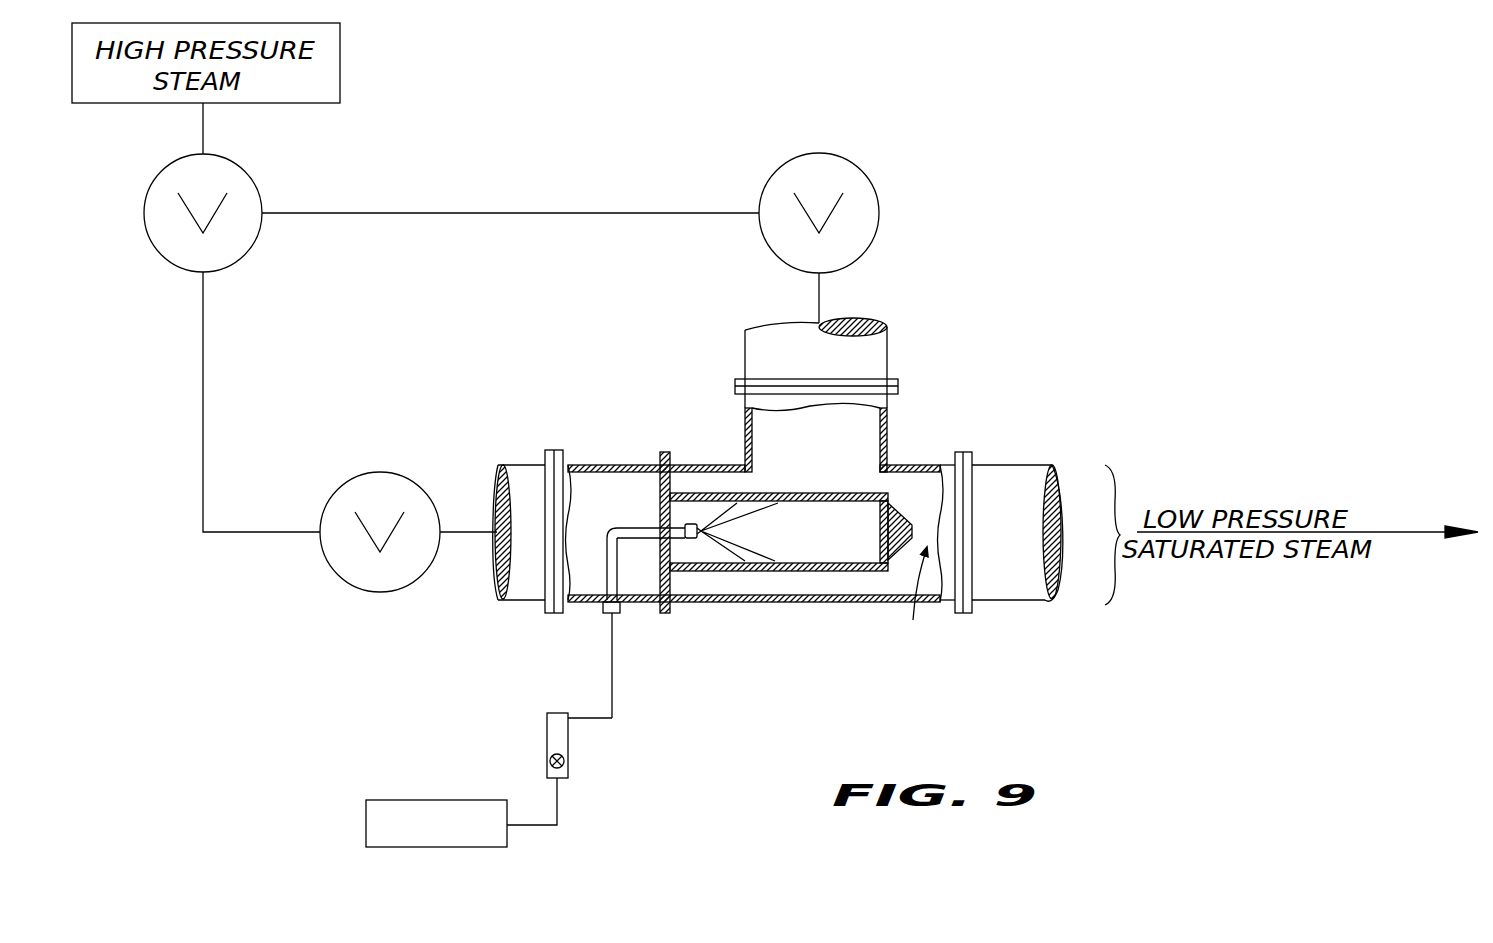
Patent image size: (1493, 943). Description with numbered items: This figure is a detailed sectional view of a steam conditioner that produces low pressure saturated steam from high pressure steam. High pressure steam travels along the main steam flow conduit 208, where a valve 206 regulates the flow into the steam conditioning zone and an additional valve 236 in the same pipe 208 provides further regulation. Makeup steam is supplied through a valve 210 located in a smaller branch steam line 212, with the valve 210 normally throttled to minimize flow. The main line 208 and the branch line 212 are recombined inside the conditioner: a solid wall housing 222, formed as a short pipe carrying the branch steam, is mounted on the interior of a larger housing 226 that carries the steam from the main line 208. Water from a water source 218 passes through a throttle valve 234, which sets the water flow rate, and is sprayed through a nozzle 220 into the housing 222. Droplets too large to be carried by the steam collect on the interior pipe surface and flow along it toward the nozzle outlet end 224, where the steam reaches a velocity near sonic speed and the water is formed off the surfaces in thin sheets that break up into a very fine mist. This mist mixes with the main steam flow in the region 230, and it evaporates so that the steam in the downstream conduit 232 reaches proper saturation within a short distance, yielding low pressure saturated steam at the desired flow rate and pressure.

The valve 206 is at (185, 270).
The additional valve 236 is at (768, 185).
The valve 210 is at (328, 562).
The conduit 208 is at (886, 352).
The branch steam line 212 is at (518, 465).
The housing 226 is at (900, 467).
The nozzle outlet end 224 is at (902, 517).
The solid wall housing 222 is at (818, 571).
The nozzle 220 is at (692, 540).
The mixing region 230 is at (913, 620).
The conduit 232 is at (1045, 593).
The throttle valve 234 is at (547, 735).
The water source 218 is at (433, 848).